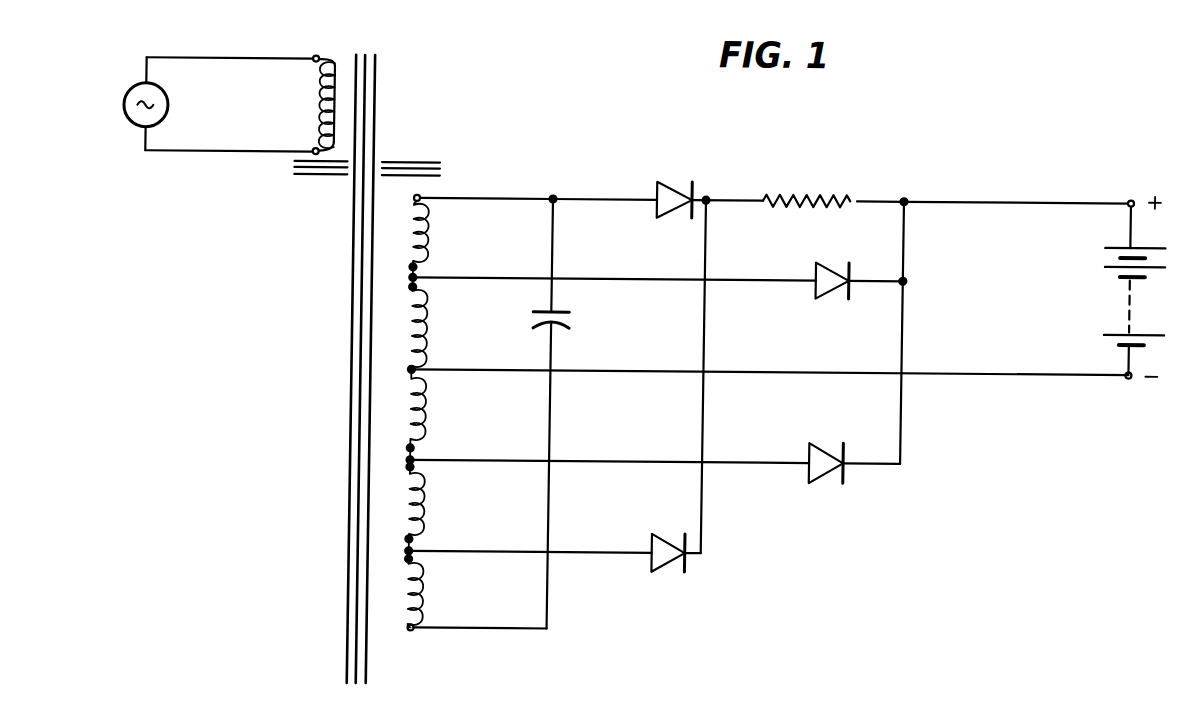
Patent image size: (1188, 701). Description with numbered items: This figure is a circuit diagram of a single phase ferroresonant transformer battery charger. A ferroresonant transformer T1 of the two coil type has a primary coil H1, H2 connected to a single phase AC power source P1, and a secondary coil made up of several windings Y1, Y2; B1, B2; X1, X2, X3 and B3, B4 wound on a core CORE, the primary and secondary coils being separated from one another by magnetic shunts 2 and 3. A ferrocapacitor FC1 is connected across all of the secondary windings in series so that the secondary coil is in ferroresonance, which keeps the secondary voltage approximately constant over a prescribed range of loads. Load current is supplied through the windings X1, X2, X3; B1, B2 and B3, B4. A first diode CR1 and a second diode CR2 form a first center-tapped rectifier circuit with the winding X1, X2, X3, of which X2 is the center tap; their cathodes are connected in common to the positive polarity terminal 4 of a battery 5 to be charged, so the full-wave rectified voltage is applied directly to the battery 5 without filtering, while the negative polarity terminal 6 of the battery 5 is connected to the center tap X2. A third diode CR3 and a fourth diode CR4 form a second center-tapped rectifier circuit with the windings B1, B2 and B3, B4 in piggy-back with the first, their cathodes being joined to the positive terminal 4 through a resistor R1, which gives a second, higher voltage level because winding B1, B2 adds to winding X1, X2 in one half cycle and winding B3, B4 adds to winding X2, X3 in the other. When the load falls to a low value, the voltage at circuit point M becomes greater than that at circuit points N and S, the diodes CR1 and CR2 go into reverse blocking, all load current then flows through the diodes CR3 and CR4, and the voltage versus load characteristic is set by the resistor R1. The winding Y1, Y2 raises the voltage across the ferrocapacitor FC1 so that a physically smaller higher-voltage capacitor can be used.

The single phase AC power source P1 is at (128, 94).
The primary coil terminal H1 is at (313, 56).
The primary coil terminal H2 is at (310, 148).
The ferroresonant transformer T1 is at (406, 140).
The core CORE is at (372, 79).
The magnetic shunt 2 is at (328, 175).
The magnetic shunt 3 is at (414, 171).
The secondary winding terminal B4 is at (421, 196).
The secondary winding terminal B3 is at (414, 268).
The secondary winding terminal X3 is at (414, 288).
The center tap X2 is at (414, 370).
The secondary winding terminal X1 is at (414, 450).
The secondary winding terminal B2 is at (414, 468).
The secondary winding terminal B1 is at (414, 540).
The secondary winding terminal Y2 is at (414, 560).
The secondary winding terminal Y1 is at (419, 627).
The ferrocapacitor FC1 is at (572, 321).
The third diode CR3 is at (685, 174).
The first diode CR1 is at (852, 250).
The second diode CR2 is at (824, 450).
The fourth diode CR4 is at (681, 567).
The resistor R1 is at (825, 196).
The circuit point N is at (746, 280).
The circuit point S is at (744, 460).
The circuit point M is at (1082, 199).
The positive polarity terminal 4 is at (1132, 196).
The battery 5 is at (1121, 259).
The negative polarity terminal 6 is at (1126, 376).